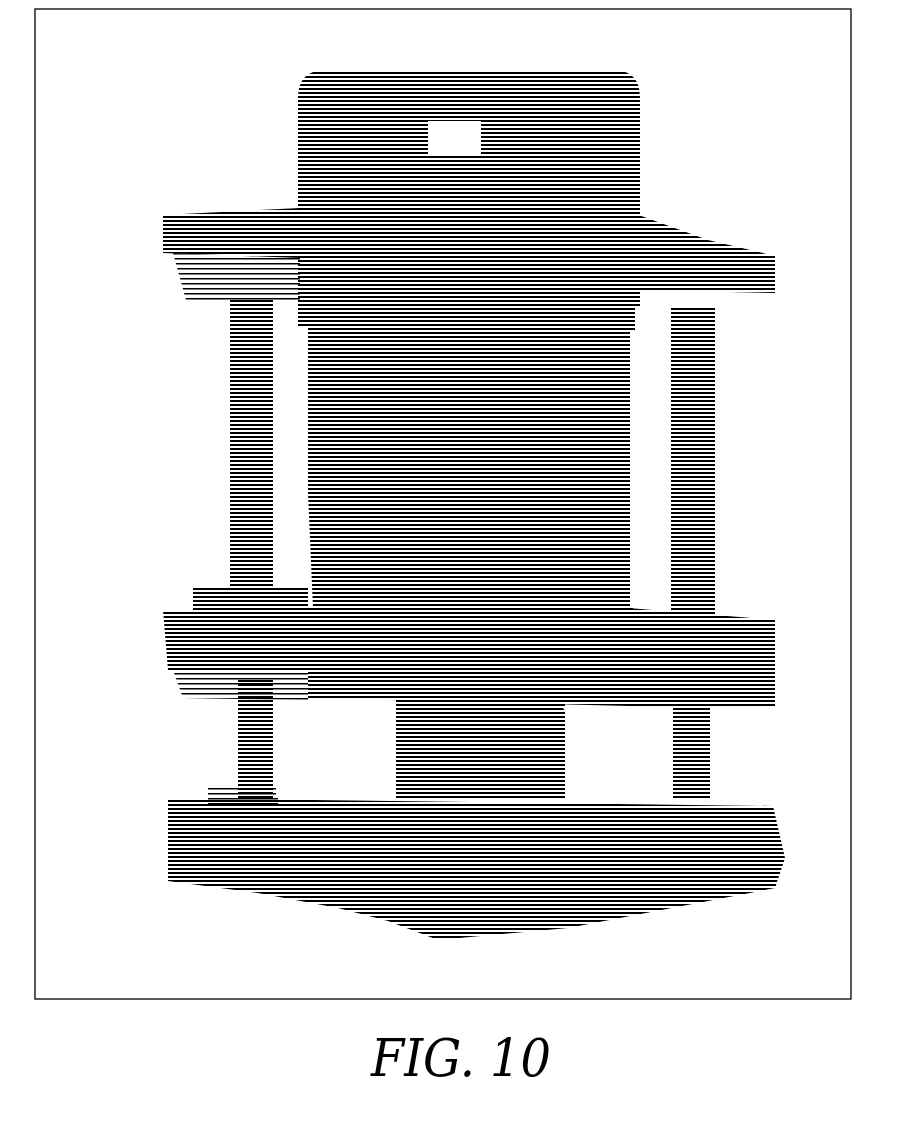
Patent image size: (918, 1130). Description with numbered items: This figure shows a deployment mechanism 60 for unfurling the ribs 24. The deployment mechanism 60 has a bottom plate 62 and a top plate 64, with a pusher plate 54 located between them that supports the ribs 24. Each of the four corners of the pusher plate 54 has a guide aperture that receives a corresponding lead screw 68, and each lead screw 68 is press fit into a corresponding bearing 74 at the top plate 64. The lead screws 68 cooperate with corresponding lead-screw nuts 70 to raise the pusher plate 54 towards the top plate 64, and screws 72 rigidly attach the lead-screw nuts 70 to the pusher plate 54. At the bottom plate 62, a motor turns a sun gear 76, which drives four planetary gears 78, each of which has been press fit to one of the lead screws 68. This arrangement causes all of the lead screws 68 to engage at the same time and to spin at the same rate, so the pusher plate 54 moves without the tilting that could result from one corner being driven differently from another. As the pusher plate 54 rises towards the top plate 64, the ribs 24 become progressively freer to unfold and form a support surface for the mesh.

The deployment mechanism 60 is at (820, 58).
The rib 24 is at (637, 162).
The top plate 64 is at (706, 231).
The bearing 74 is at (233, 228).
The lead screw 68 is at (222, 432).
The pusher plate 54 is at (737, 670).
The screw 72 is at (190, 591).
The lead-screw nut 70 is at (190, 608).
The planetary gear 78 is at (203, 804).
The bottom plate 62 is at (690, 893).
The sun gear 76 is at (267, 867).